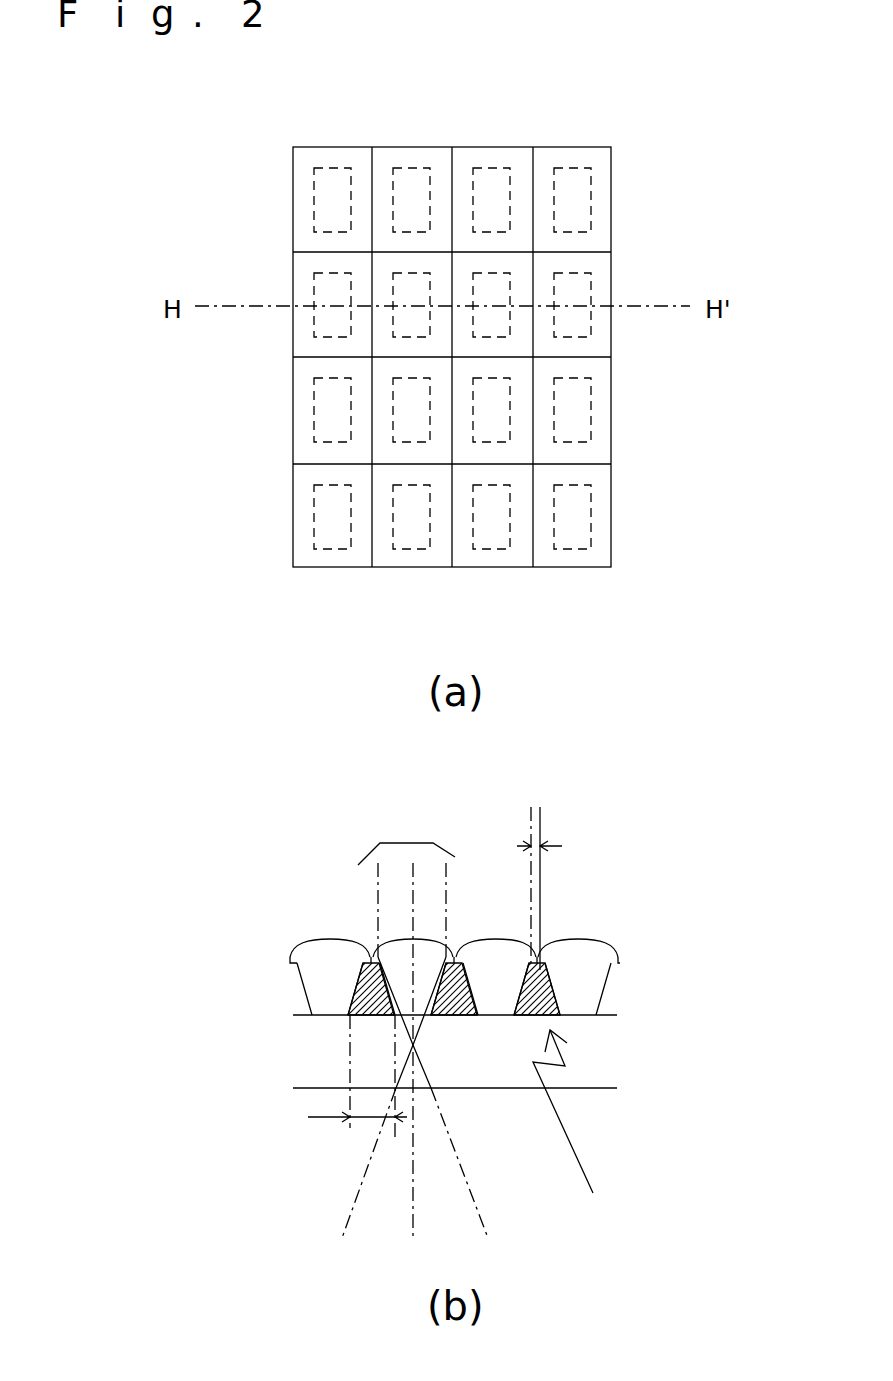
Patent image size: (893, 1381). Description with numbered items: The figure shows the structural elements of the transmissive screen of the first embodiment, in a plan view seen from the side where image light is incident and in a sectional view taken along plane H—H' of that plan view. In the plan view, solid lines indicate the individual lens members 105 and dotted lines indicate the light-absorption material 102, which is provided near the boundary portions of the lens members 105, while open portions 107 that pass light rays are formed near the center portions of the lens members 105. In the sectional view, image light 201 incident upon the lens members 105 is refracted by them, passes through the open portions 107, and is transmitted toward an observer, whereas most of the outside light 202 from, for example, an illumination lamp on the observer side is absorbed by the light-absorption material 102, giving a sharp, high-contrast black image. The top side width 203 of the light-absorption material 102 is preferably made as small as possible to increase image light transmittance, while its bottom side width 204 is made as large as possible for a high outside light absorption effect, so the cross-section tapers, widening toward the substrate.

The light-absorption material 102 is at (590, 207).
The lens members 105 is at (530, 167).
The open portions 107 is at (575, 183).
The image light 201 is at (415, 1013).
The outside light 202 is at (586, 1148).
The top side width 203 is at (560, 846).
The bottom side width 204 is at (307, 1118).